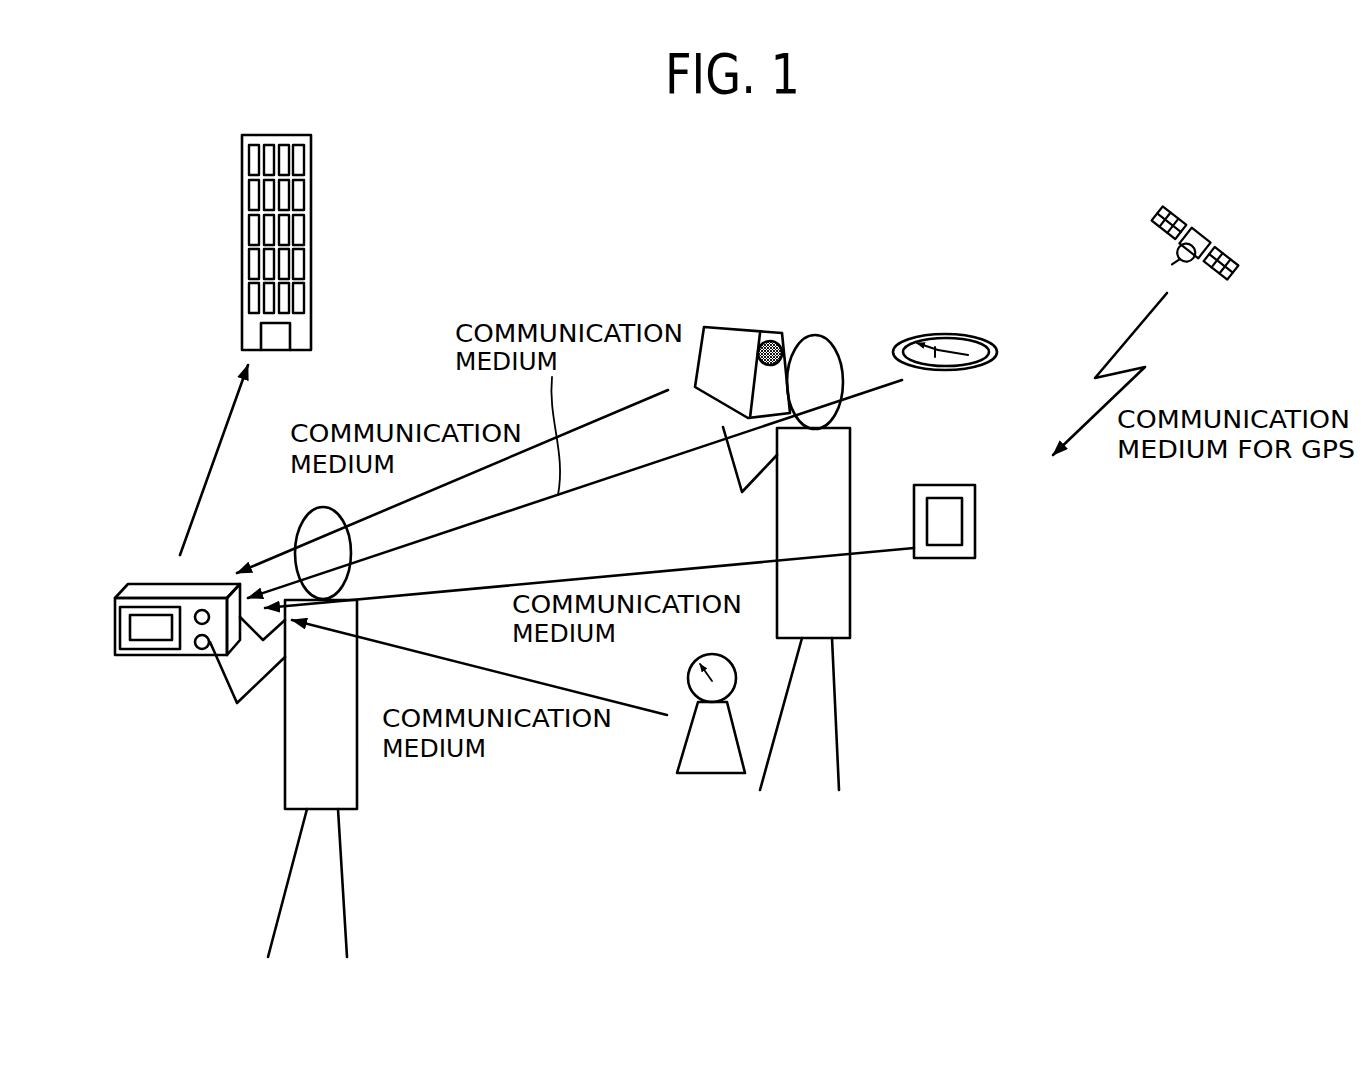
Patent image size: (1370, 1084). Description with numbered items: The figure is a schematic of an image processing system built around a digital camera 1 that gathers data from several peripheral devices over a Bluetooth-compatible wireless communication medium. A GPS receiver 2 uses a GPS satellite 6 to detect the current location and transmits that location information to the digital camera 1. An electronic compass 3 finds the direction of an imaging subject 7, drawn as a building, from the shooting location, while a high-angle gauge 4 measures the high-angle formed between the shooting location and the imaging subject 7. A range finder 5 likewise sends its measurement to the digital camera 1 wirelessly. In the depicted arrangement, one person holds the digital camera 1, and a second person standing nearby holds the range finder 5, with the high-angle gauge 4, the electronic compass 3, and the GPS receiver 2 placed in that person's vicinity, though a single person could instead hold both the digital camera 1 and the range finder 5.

The digital camera 1 is at (145, 656).
The GPS receiver 2 is at (953, 560).
The electronic compass 3 is at (958, 333).
The high-angle gauge 4 is at (710, 775).
The range finder 5 is at (747, 327).
The GPS satellite 6 is at (1182, 215).
The imaging subject 7 is at (312, 238).